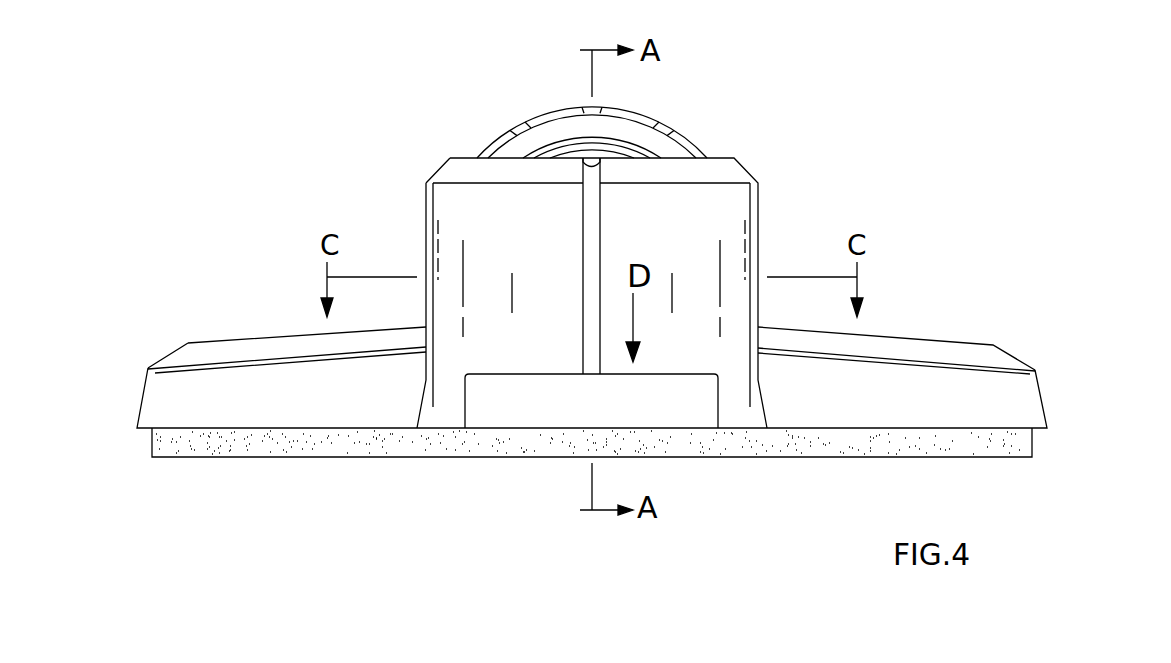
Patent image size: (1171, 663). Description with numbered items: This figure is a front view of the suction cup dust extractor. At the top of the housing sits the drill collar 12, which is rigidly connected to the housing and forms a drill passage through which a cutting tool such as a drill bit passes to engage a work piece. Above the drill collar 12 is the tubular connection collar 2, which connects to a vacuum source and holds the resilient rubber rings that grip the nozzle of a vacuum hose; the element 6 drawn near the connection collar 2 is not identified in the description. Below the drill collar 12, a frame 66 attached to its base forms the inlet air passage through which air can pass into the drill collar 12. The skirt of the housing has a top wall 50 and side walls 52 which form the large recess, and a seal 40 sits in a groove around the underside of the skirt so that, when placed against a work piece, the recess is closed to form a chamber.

The tubular connection collar 2 is at (558, 137).
The dome outer ring 6 is at (680, 135).
The drill collar 12 is at (545, 255).
The seal 40 is at (168, 442).
The top wall 50 is at (272, 345).
The side walls 52 is at (142, 387).
The frame 66 is at (542, 402).